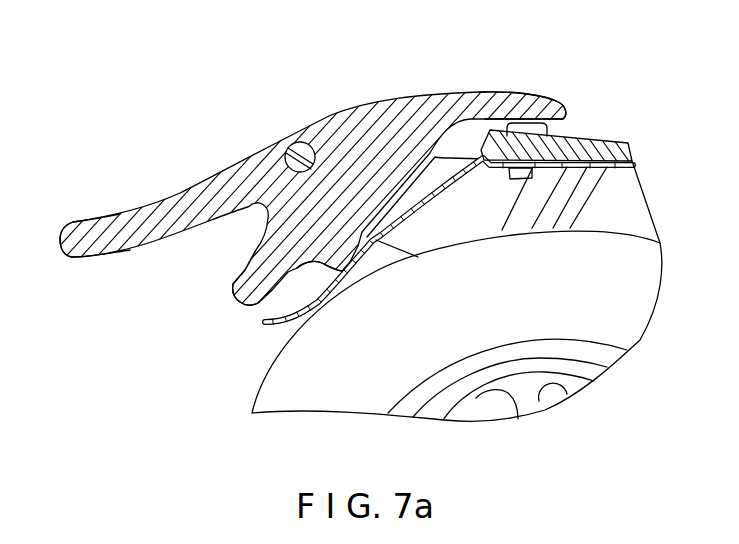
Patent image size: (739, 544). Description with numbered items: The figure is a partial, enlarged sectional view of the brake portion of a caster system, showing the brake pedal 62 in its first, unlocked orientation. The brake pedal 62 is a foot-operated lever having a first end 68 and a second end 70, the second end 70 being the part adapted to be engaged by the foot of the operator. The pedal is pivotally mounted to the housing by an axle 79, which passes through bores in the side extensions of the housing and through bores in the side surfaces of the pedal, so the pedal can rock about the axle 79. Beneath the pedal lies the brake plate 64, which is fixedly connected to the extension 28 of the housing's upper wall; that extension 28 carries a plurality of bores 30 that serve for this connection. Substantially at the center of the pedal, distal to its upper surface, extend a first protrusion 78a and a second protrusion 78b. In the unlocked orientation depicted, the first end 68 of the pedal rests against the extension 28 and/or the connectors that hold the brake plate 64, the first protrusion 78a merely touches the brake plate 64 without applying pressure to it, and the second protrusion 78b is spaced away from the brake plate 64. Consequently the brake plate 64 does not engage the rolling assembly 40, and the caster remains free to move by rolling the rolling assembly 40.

The extension 28 is at (580, 152).
The bores 30 is at (509, 177).
The rolling assembly 40 is at (251, 394).
The brake pedal 62 is at (172, 177).
The brake plate 64 is at (263, 322).
The first end 68 is at (543, 98).
The second end 70 is at (95, 228).
The first protrusion 78a is at (345, 262).
The second protrusion 78b is at (250, 285).
The axle 79 is at (292, 146).